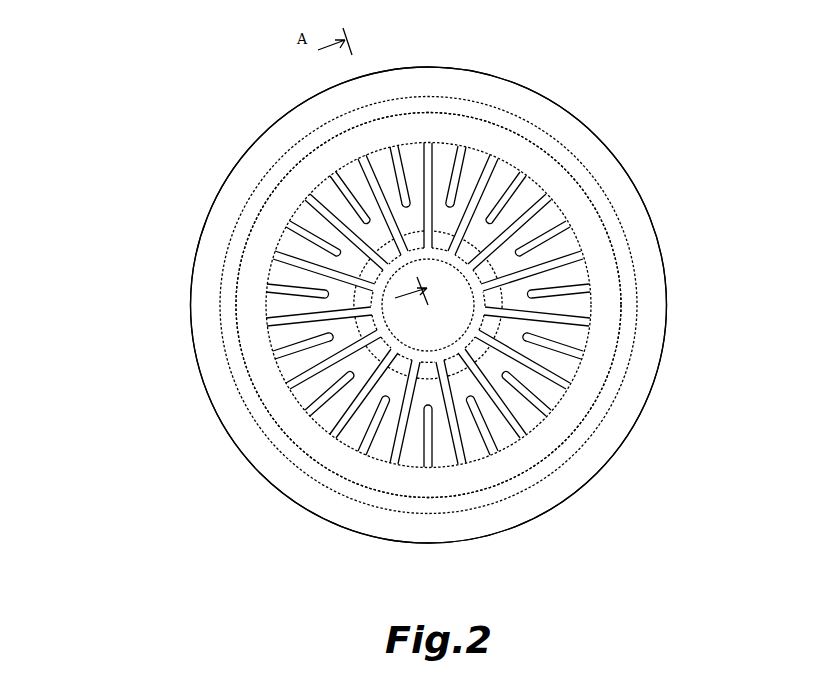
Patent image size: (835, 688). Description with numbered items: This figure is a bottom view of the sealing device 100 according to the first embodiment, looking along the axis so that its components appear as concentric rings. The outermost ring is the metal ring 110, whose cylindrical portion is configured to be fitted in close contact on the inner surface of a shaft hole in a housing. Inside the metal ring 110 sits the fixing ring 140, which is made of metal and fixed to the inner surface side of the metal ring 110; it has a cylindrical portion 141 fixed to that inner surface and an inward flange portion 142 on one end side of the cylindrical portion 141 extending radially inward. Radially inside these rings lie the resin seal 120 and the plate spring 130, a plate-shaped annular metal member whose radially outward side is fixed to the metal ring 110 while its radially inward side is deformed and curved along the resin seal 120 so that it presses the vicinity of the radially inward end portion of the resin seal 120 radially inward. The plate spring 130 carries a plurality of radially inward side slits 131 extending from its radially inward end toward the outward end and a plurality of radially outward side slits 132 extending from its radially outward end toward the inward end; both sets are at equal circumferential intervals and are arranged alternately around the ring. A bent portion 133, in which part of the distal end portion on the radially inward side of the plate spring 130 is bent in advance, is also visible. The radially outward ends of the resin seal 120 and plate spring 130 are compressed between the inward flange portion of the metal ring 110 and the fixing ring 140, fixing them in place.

The sealing device 100 is at (668, 148).
The metal ring 110 is at (645, 268).
The resin seal 120 is at (476, 152).
The plate spring 130 is at (327, 193).
The radially inward side slits 131 is at (268, 306).
The radially outward side slits 132 is at (275, 262).
The bent portion 133 is at (378, 352).
The fixing ring 140 is at (638, 338).
The cylindrical portion 141 is at (612, 395).
The inward flange portion 142 is at (293, 423).